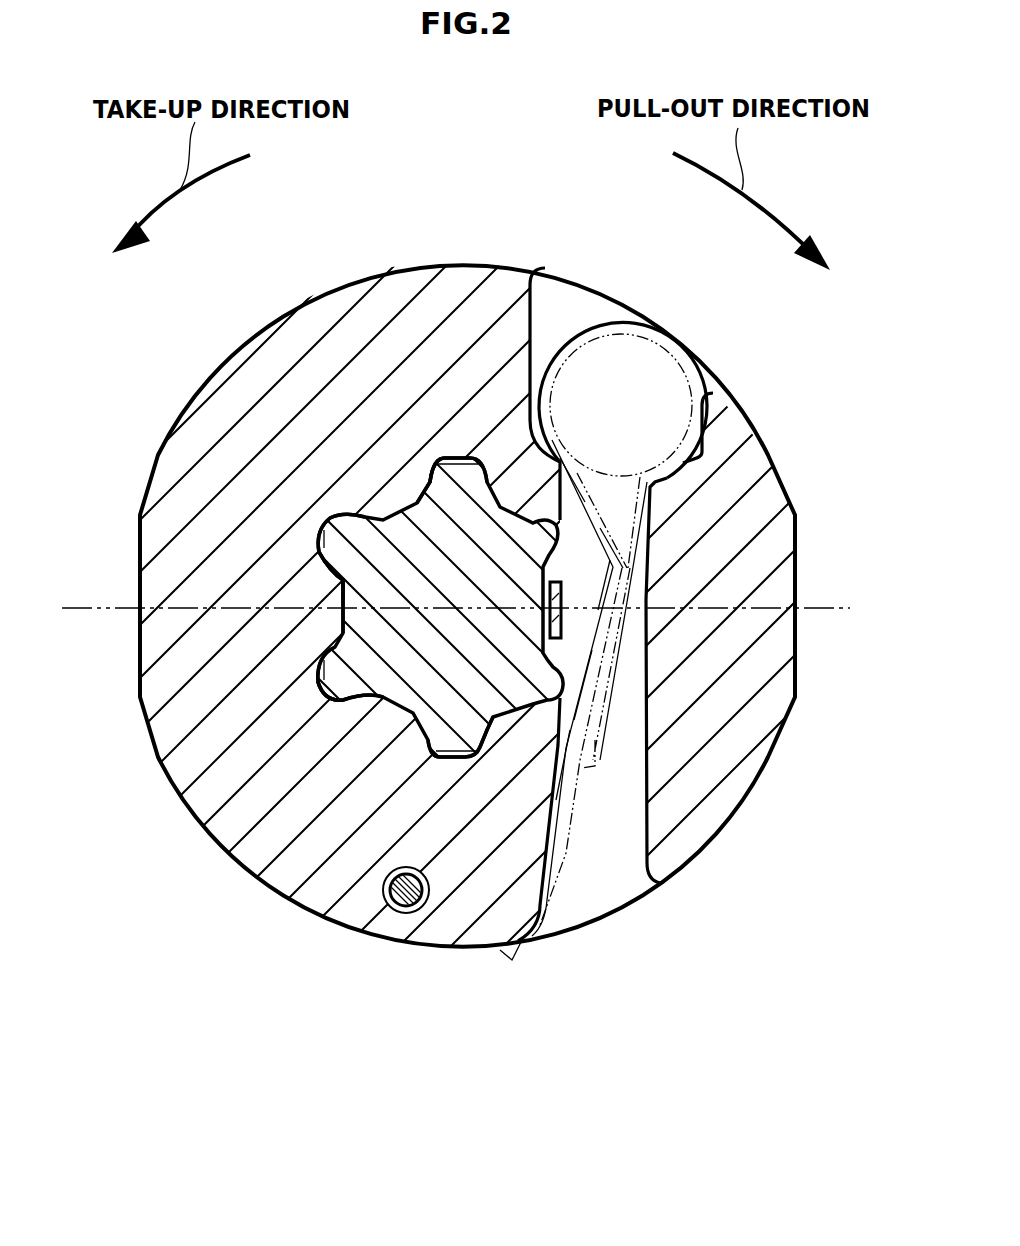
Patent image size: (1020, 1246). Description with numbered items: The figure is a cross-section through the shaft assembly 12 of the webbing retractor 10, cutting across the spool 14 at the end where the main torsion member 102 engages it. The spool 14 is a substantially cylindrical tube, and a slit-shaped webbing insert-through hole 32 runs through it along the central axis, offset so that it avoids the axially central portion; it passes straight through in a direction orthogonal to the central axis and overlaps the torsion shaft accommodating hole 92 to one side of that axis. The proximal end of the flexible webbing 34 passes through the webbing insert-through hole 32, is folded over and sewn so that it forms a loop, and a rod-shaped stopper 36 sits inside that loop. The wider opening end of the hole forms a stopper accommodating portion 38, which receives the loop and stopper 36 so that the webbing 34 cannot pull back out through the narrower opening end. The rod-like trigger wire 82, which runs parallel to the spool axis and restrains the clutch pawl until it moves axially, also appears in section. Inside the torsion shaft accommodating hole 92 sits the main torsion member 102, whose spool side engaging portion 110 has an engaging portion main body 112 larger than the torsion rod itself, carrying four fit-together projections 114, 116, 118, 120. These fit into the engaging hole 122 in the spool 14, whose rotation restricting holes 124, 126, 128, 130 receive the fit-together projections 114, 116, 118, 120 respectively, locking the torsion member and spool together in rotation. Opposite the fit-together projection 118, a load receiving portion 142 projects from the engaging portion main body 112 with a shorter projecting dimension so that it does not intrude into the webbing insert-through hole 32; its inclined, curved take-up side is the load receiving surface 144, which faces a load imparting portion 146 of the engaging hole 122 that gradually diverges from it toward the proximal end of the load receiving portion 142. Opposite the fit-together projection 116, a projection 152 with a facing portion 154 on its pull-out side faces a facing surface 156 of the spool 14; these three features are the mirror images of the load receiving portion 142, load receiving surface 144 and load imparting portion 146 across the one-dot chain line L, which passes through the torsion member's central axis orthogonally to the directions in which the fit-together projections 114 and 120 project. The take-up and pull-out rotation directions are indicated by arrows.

The webbing retractor 10 is at (503, 638).
The shaft assembly 12 is at (503, 638).
The spool 14 is at (266, 882).
The webbing insert-through hole 32 is at (649, 800).
The webbing 34 is at (698, 684).
The stopper 36 is at (679, 357).
The stopper accommodating portion 38 is at (533, 300).
The trigger wire 82 is at (406, 913).
The torsion shaft accommodating hole 92 is at (386, 894).
The main torsion member 102 is at (321, 618).
The spool side engaging portion 110 is at (321, 618).
The engaging portion main body 112 is at (353, 622).
The fit-together projection 114 is at (482, 465).
The fit-together projection 116 is at (336, 520).
The fit-together projection 118 is at (318, 665).
The fit-together projection 120 is at (445, 745).
The engaging hole 122 is at (435, 758).
The rotation restricting hole 124 is at (443, 468).
The rotation restricting hole 126 is at (318, 560).
The rotation restricting hole 128 is at (322, 682).
The rotation restricting hole 130 is at (520, 935).
The load receiving portion 142 is at (560, 566).
The load receiving surface 144 is at (560, 480).
The load imparting portion 146 is at (546, 552).
The projection 152 is at (562, 688).
The facing portion 154 is at (560, 727).
The facing surface 156 is at (563, 662).
The one-dot chain line L is at (105, 605).